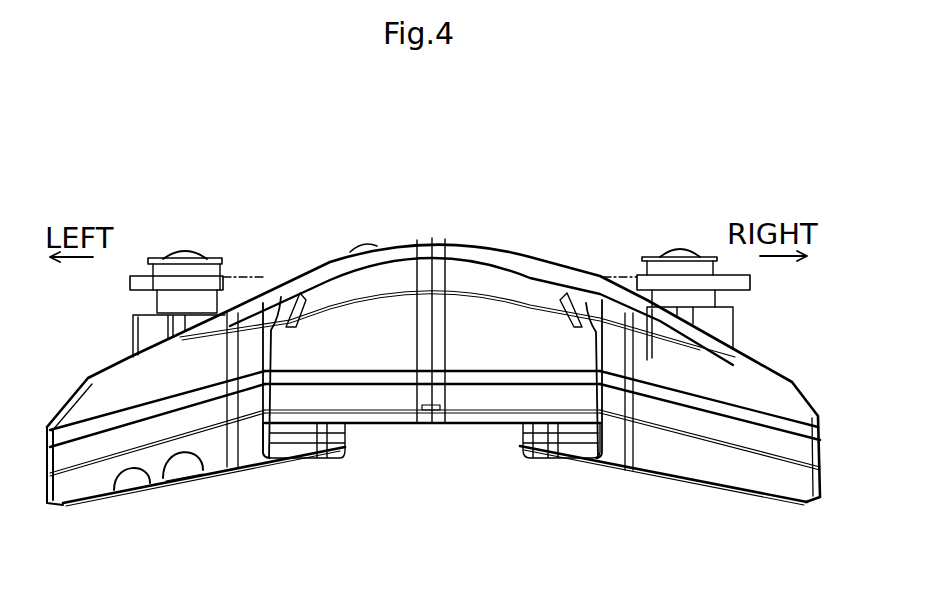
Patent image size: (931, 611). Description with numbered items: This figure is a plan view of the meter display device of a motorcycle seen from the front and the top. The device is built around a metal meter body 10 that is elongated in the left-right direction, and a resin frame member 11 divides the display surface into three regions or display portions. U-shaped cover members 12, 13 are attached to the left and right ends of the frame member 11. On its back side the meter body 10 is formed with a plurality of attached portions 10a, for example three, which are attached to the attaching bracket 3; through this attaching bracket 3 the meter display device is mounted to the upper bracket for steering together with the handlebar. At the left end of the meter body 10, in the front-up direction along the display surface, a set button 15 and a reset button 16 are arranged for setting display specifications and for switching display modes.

The attaching bracket 3 is at (130, 290).
The meter body 10 is at (393, 347).
The attached portions 10a is at (185, 266).
The frame member 11 is at (463, 400).
The cover member 12 is at (92, 480).
The cover member 13 is at (700, 448).
The set button 15 is at (135, 497).
The reset button 16 is at (183, 477).